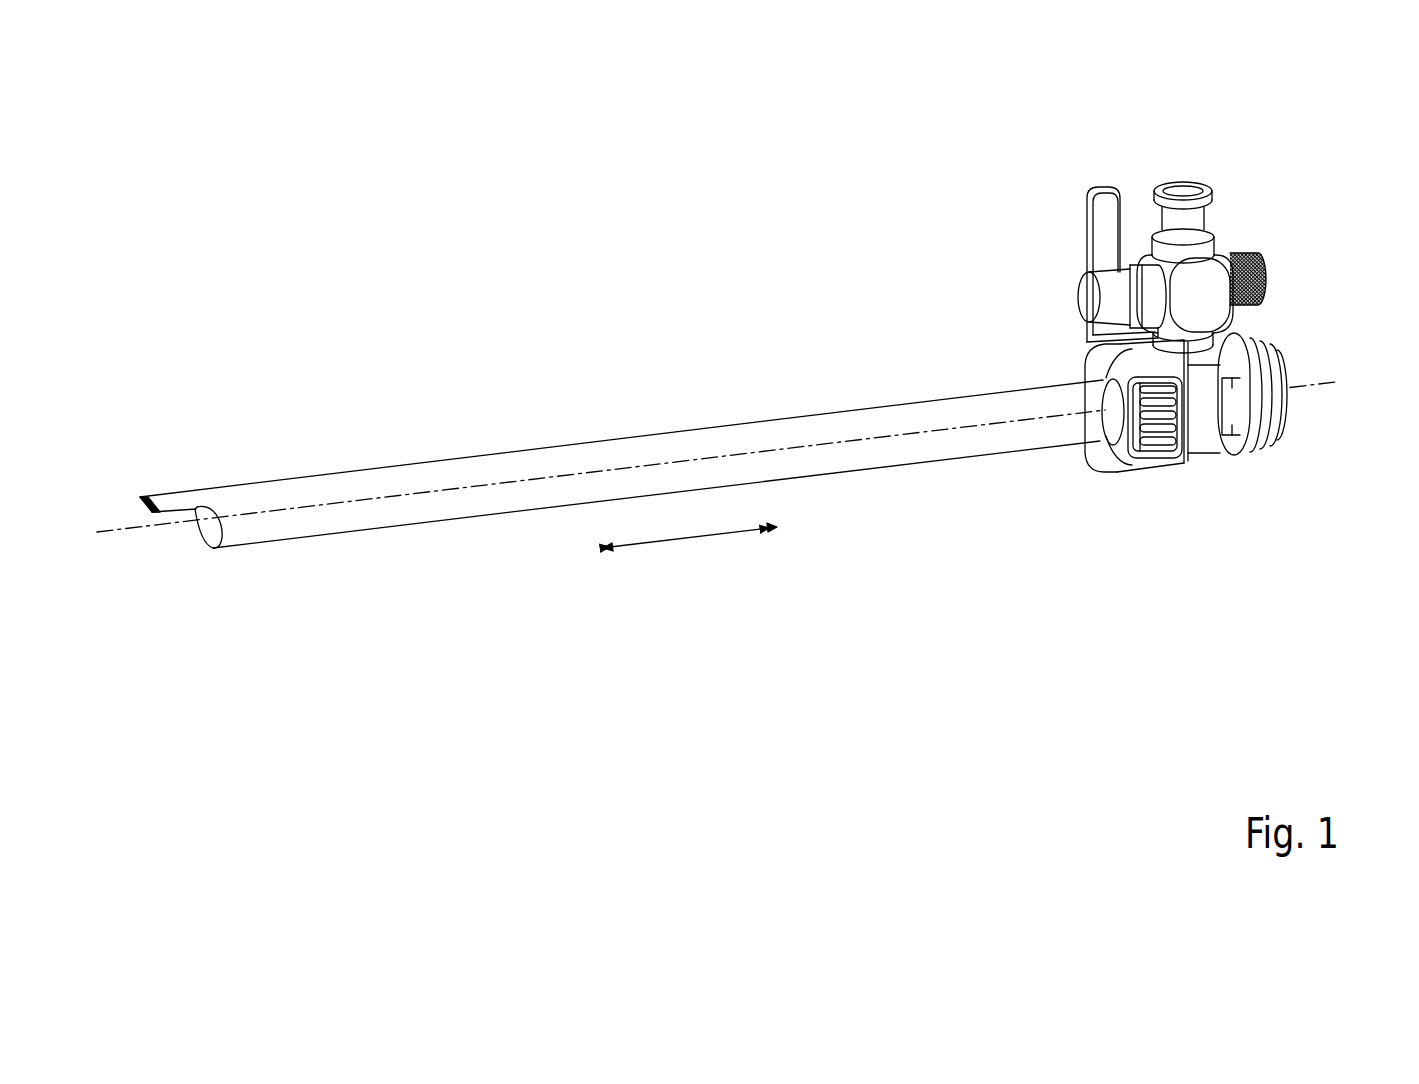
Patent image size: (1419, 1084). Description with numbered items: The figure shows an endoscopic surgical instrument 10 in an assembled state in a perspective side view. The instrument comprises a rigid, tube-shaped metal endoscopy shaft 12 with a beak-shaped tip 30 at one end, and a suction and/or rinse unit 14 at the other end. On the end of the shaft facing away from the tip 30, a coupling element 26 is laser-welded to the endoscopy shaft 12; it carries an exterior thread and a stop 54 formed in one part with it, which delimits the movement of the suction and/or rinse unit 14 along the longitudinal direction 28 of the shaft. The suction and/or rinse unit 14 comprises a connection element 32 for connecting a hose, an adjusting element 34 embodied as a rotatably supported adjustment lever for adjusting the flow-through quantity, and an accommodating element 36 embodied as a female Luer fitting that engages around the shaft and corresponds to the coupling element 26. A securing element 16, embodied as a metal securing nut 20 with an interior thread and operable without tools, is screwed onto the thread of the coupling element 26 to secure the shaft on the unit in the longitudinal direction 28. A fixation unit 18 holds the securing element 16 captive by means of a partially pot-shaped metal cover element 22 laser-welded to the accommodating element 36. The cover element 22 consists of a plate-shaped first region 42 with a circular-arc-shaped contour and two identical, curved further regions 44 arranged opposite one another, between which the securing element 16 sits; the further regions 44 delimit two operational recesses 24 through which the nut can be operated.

The endoscopic surgical instrument 10 is at (822, 308).
The endoscopy shaft 12 is at (620, 465).
The suction and/or rinse unit 14 is at (1255, 225).
The securing element 16 is at (1190, 413).
The fixation unit 18 is at (1092, 481).
The securing nut 20 is at (1299, 379).
The cover element 22 is at (1118, 468).
The operational recess 24 is at (1167, 460).
The coupling element 26 is at (1288, 378).
The longitudinal direction 28 is at (690, 540).
The beak-shaped tip 30 is at (170, 502).
The connection element 32 is at (1185, 218).
The adjusting element 34 is at (1108, 233).
The accommodating element 36 is at (1199, 418).
The first region 42 is at (1087, 453).
The further regions 44 is at (1142, 357).
The stop 54 is at (1286, 423).